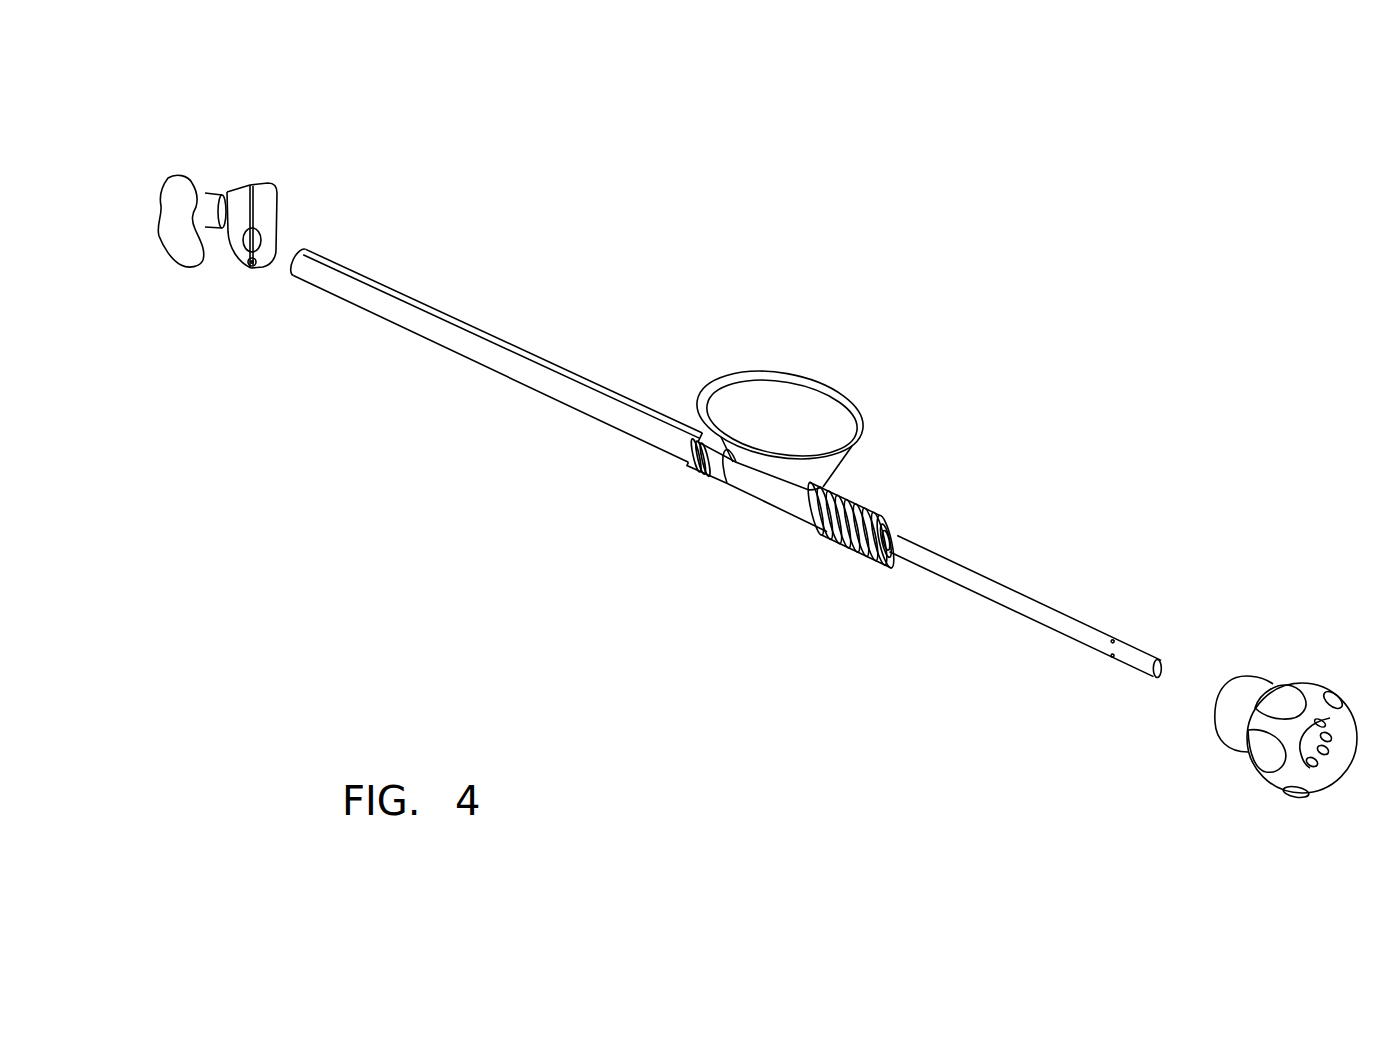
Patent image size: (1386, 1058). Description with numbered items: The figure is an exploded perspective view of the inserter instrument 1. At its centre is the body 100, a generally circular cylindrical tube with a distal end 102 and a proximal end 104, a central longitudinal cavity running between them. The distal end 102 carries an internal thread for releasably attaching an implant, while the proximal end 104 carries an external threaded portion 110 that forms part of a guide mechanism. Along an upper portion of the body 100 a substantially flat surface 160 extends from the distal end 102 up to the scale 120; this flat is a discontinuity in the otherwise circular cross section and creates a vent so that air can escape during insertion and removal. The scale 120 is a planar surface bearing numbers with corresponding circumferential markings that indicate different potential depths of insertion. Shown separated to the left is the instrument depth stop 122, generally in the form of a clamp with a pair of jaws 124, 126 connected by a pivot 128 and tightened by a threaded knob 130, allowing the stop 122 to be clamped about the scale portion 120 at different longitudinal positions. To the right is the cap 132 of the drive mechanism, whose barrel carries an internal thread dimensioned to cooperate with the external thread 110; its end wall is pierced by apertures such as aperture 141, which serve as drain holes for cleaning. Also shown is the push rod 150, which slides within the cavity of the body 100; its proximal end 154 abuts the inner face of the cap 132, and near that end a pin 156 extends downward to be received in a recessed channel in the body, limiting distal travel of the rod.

The instrument 1 is at (868, 255).
The body 100 is at (543, 352).
The distal end 102 is at (313, 238).
The proximal end 104 is at (877, 492).
The external threaded portion 110 is at (838, 558).
The scale 120 is at (663, 492).
The instrument depth stop 122 is at (210, 278).
The jaw 124 is at (233, 187).
The jaw 126 is at (268, 187).
The pivot 128 is at (252, 273).
The threaded knob 130 is at (168, 227).
The cap 132 is at (1306, 677).
The aperture 141 is at (1330, 752).
The push rod 150 is at (1041, 585).
The proximal end 154 is at (1162, 657).
The pin 156 is at (1110, 668).
The flat surface 160 is at (461, 325).